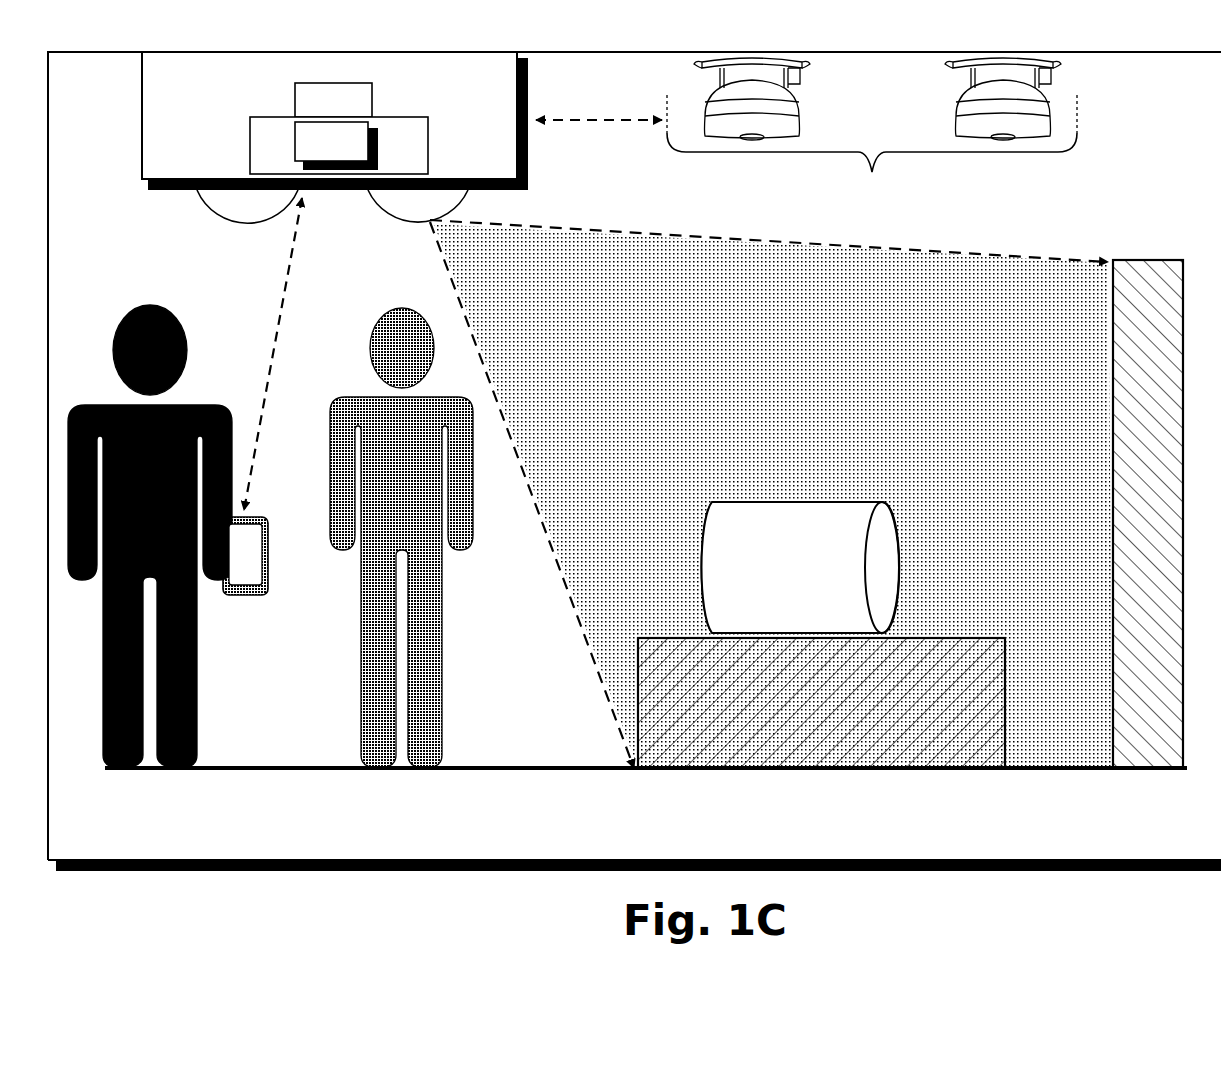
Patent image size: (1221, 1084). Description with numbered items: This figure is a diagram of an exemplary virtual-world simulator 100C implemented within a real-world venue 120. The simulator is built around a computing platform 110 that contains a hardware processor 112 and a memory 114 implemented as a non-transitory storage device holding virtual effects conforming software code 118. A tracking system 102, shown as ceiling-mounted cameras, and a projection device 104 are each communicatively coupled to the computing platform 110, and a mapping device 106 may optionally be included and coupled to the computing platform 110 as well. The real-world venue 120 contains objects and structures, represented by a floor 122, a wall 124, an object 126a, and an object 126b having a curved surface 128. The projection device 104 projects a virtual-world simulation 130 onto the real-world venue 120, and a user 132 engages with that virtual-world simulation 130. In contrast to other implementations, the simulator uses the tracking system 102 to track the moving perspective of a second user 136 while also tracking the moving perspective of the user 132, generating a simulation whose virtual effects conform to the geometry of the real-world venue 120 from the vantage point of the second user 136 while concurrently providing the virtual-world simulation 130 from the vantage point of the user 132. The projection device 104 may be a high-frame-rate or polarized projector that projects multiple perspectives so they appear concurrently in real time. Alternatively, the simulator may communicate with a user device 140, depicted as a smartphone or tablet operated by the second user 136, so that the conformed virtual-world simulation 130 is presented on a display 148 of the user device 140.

The virtual-world simulator 100C is at (150, 206).
The tracking system 102 is at (806, 132).
The projection device 104 is at (378, 213).
The mapping device 106 is at (233, 210).
The computing platform 110 is at (528, 158).
The hardware processor 112 is at (333, 100).
The memory 114 is at (250, 146).
The virtual effects conforming software code 118 is at (336, 146).
The real-world venue 120 is at (634, 461).
The floor 122 is at (226, 771).
The wall 124 is at (1113, 386).
The object 126a is at (980, 638).
The object 126b is at (801, 567).
The curved surface 128 is at (794, 500).
The virtual-world simulation 130 is at (771, 494).
The user 132 is at (445, 600).
The second user 136 is at (200, 690).
The user device 140 is at (238, 600).
The display 148 is at (240, 566).